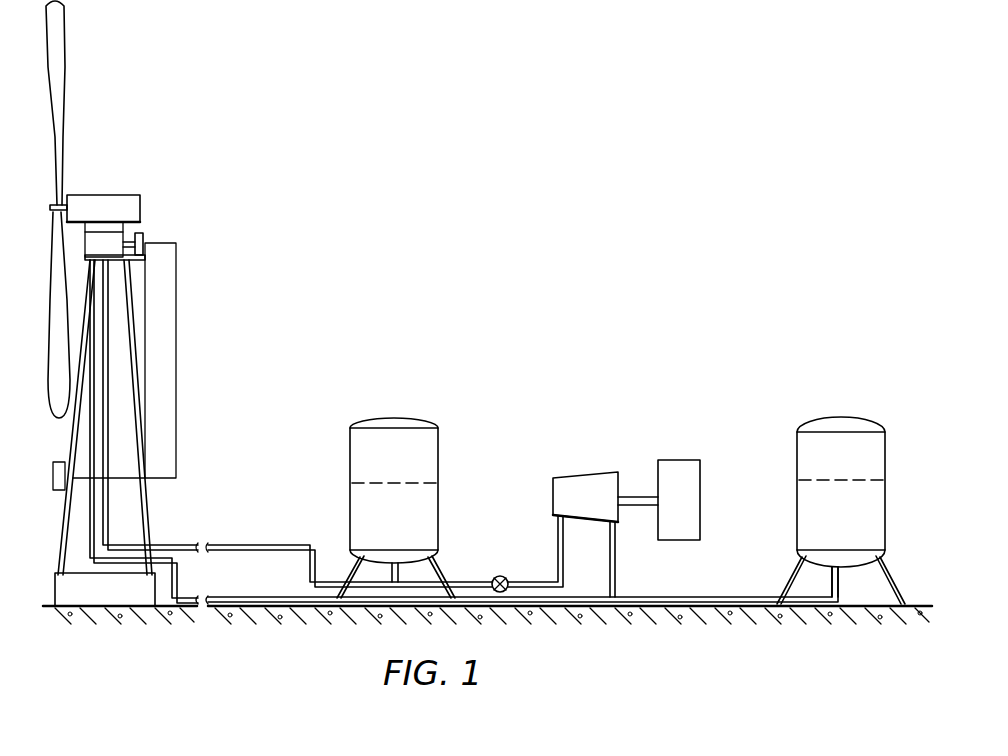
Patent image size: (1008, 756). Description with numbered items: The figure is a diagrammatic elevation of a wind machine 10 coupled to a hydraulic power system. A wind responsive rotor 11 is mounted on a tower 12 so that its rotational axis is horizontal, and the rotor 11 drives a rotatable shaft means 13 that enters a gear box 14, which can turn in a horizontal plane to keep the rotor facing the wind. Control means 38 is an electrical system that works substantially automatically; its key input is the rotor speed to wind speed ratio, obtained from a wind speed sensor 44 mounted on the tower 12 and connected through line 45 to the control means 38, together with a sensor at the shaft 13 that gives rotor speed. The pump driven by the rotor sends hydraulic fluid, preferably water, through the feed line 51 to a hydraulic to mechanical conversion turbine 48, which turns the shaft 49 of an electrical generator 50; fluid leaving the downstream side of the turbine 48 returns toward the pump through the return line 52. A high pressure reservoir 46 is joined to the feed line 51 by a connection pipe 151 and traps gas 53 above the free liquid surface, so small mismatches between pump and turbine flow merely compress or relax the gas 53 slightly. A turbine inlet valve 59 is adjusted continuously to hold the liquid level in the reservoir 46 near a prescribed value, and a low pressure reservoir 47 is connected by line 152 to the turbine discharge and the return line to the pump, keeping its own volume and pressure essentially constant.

The wind machine 10 is at (142, 171).
The wind responsive rotor 11 is at (65, 68).
The tower 12 is at (133, 368).
The rotatable shaft means 13 is at (62, 203).
The gear box 14 is at (143, 200).
The control means 38 is at (148, 237).
The wind speed sensor 44 is at (59, 462).
The line 45 is at (176, 262).
The high pressure reservoir 46 is at (438, 478).
The low pressure reservoir 47 is at (797, 440).
The turbine 48 is at (583, 475).
The shaft 49 is at (633, 495).
The electrical generator 50 is at (683, 460).
The feed line 51 is at (238, 545).
The return line 52 is at (262, 598).
The gas space 53 is at (437, 440).
The turbine inlet valve 59 is at (502, 574).
The connection pipe 151 is at (387, 568).
The line 152 is at (703, 597).